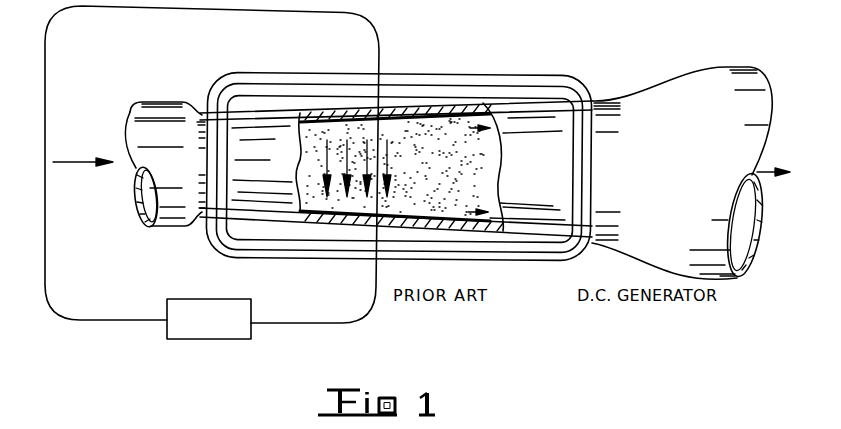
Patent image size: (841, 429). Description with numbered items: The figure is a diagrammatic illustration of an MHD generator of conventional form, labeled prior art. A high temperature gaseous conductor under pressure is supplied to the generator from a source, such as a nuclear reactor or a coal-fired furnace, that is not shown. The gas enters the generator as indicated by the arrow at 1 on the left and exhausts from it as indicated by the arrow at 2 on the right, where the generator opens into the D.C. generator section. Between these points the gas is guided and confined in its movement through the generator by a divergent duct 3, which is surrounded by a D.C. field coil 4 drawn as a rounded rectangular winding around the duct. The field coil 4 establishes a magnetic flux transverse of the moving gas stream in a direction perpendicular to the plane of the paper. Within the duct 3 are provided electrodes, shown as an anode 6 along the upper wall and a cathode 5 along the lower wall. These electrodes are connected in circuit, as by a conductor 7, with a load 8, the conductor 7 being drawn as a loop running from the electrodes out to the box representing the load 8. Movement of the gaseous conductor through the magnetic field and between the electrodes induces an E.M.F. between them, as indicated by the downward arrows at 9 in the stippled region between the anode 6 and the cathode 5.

The arrow indicating gas entry 1 is at (88, 164).
The arrow indicating gas exhaust 2 is at (770, 172).
The divergent duct 3 is at (256, 170).
The D.C. field coil 4 is at (330, 72).
The cathode 5 is at (398, 216).
The anode 6 is at (408, 118).
The conductor 7 is at (282, 324).
The load 8 is at (216, 329).
The arrows indicating induced E.M.F. 9 is at (390, 166).